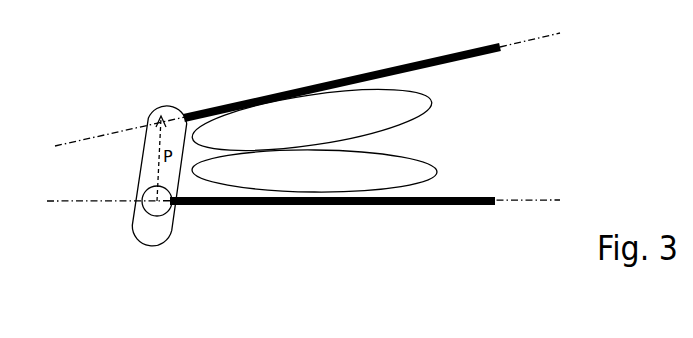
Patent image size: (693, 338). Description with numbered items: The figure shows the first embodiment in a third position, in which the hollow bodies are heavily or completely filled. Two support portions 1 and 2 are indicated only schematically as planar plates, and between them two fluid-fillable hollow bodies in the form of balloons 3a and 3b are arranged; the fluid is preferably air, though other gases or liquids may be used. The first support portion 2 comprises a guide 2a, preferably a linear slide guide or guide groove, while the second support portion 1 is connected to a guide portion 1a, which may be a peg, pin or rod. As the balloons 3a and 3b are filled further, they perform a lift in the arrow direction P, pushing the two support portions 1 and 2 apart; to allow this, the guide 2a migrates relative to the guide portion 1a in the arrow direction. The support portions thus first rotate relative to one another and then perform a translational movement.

The second support portion 1 is at (383, 205).
The guide portion 1a is at (165, 209).
The first support portion 2 is at (378, 70).
The guide 2a is at (147, 145).
The balloon 3a is at (433, 102).
The balloon 3b is at (438, 172).